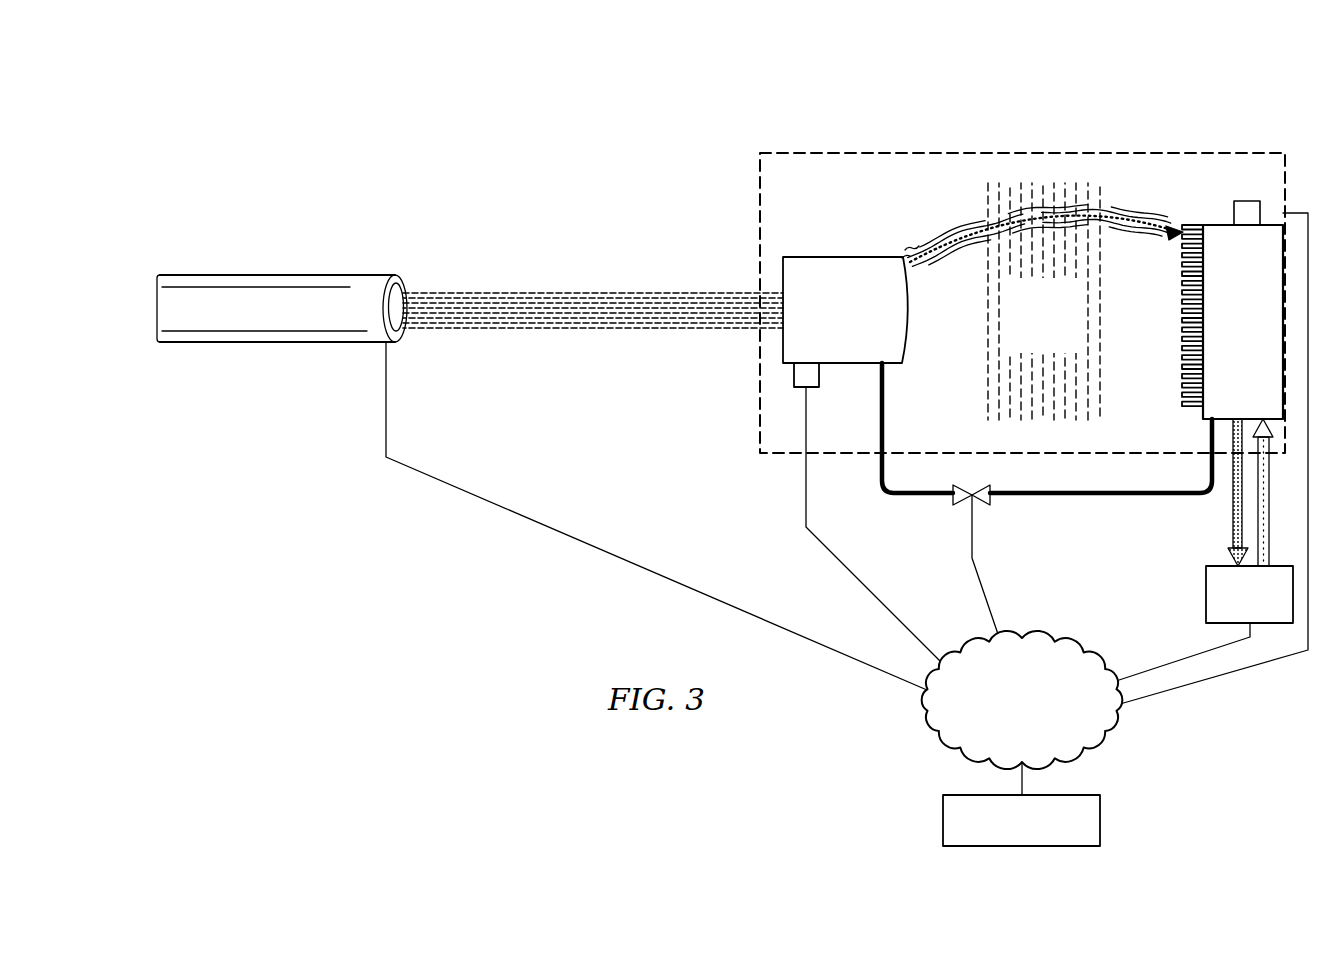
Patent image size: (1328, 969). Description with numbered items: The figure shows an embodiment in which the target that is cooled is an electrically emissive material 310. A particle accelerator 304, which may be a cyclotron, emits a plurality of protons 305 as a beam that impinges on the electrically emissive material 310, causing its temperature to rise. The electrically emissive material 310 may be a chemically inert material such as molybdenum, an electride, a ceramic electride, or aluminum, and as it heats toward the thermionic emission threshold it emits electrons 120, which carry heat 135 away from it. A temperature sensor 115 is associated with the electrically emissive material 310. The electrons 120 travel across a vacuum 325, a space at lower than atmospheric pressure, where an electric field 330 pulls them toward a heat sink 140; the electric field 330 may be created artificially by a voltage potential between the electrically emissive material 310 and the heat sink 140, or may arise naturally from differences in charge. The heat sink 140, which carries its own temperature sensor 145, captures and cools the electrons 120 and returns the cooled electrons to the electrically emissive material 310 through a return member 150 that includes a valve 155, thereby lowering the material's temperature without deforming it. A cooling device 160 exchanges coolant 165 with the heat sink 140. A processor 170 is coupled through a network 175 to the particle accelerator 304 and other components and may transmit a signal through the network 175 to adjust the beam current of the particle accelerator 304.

The particle accelerator 304 is at (275, 273).
The plurality of protons 305 is at (547, 296).
The electrically emissive material 310 is at (811, 257).
The temperature sensor 115 is at (794, 378).
The heat 135 is at (914, 249).
The electrons 120 is at (960, 232).
The vacuum 325 is at (1150, 206).
The electric field 330 is at (1027, 349).
The heat sink 140 is at (1225, 357).
The temperature sensor 145 is at (1250, 201).
The return member 150 is at (1077, 526).
The valve 155 is at (952, 502).
The coolant 165 is at (1233, 526).
The cooling device 160 is at (1206, 597).
The network 175 is at (1004, 724).
The processor 170 is at (1100, 819).